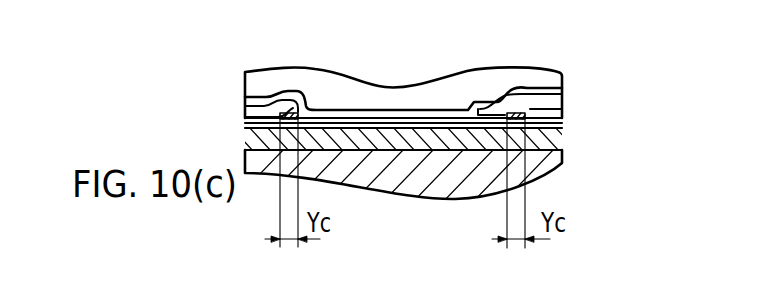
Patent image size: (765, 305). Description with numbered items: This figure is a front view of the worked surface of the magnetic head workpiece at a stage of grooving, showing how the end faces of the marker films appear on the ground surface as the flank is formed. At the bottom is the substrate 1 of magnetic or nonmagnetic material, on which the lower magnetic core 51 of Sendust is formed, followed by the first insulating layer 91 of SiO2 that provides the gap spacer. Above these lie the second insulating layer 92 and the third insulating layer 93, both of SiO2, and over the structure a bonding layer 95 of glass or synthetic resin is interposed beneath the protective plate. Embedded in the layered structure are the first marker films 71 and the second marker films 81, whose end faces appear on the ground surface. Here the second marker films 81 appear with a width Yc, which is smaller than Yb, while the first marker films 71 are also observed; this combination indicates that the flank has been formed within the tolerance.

The substrate 1 is at (525, 174).
The lower magnetic core 51 is at (563, 147).
The first insulating layer 91 is at (562, 120).
The second marker films 81 is at (308, 110).
The first marker films 71 is at (260, 106).
The second insulating layer 92 is at (283, 100).
The third insulating layer 93 is at (402, 112).
The bonding layer 95 is at (517, 80).